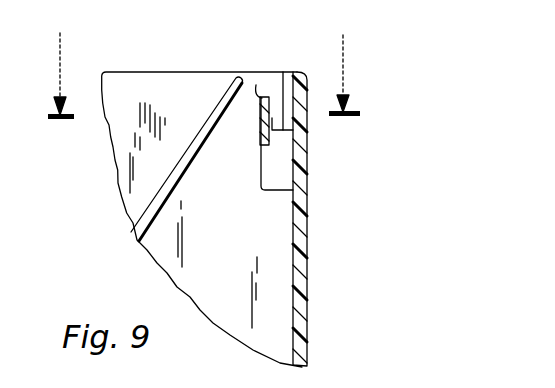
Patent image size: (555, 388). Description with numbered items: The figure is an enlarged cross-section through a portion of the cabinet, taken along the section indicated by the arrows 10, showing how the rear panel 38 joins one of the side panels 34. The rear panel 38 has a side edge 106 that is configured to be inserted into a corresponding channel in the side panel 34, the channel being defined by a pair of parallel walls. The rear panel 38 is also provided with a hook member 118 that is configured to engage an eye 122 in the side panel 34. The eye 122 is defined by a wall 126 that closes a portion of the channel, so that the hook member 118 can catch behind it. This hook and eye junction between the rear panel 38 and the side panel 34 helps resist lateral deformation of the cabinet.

The section line indicator 10 is at (201, 76).
The side panel 34 is at (306, 296).
The rear panel 38 is at (250, 259).
The side edge 106 is at (258, 215).
The hook member 118 is at (286, 117).
The eye 122 is at (272, 118).
The wall 126 is at (262, 97).